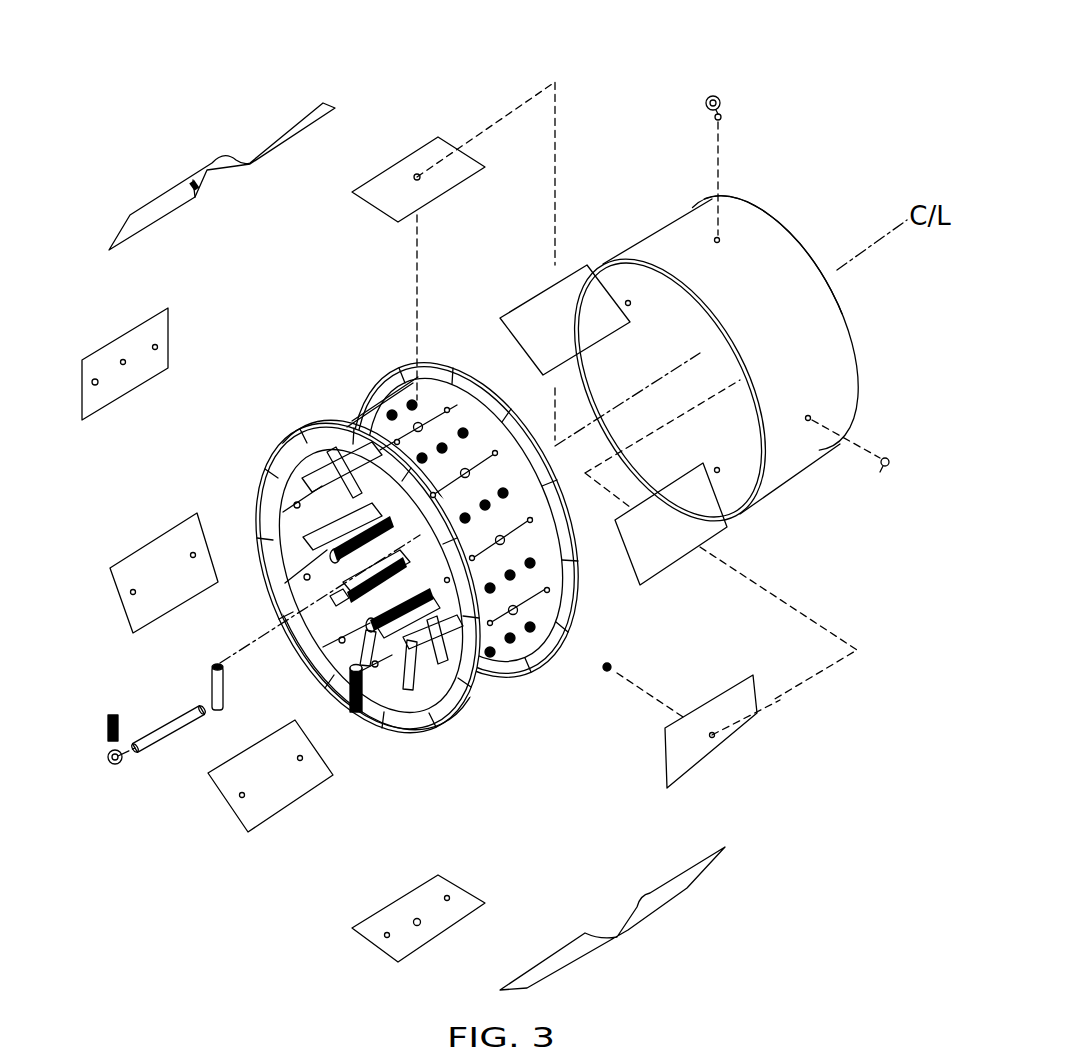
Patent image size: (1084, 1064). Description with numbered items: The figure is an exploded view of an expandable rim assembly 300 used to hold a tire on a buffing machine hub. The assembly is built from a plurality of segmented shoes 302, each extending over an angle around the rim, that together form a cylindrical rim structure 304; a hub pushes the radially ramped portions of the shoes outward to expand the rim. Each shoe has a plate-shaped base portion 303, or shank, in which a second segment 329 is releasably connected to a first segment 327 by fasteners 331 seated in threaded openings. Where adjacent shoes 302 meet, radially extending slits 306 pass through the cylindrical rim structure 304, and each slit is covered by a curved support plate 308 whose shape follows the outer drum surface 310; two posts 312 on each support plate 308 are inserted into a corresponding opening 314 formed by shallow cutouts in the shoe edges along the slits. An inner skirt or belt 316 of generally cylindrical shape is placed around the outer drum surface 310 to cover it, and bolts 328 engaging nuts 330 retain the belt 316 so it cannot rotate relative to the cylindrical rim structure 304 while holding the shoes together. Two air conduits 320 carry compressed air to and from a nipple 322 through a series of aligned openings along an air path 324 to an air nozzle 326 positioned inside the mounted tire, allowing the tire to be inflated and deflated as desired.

The expandable rim assembly 300 is at (224, 102).
The segmented shoes 302 is at (270, 463).
The base portion 303 is at (327, 578).
The cylindrical rim structure 304 is at (369, 738).
The radially extending slits 306 is at (496, 622).
The support plate 308 is at (150, 362).
The outer drum surface 310 is at (395, 408).
The posts 312 is at (141, 225).
The opening 314 is at (370, 428).
The inner skirt or belt 316 is at (677, 233).
The air conduits 320 is at (347, 663).
The nipple 322 is at (110, 708).
The air path 324 is at (482, 130).
The air nozzle 326 is at (722, 99).
The first segment 327 is at (330, 594).
The bolts 328 is at (888, 470).
The second segment 329 is at (360, 598).
The nuts 330 is at (607, 676).
The fasteners 331 is at (458, 412).